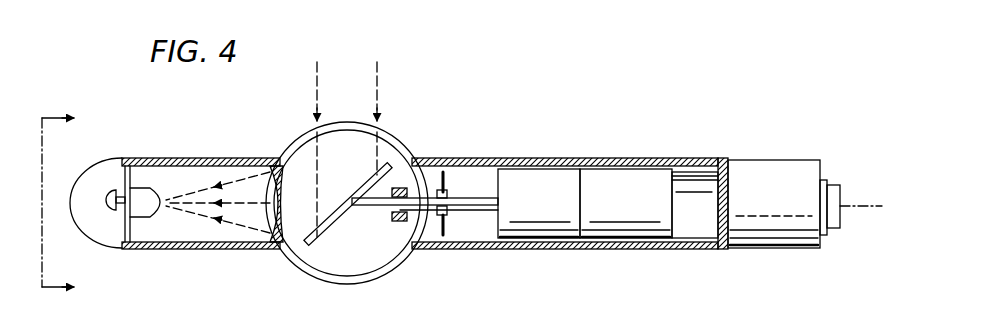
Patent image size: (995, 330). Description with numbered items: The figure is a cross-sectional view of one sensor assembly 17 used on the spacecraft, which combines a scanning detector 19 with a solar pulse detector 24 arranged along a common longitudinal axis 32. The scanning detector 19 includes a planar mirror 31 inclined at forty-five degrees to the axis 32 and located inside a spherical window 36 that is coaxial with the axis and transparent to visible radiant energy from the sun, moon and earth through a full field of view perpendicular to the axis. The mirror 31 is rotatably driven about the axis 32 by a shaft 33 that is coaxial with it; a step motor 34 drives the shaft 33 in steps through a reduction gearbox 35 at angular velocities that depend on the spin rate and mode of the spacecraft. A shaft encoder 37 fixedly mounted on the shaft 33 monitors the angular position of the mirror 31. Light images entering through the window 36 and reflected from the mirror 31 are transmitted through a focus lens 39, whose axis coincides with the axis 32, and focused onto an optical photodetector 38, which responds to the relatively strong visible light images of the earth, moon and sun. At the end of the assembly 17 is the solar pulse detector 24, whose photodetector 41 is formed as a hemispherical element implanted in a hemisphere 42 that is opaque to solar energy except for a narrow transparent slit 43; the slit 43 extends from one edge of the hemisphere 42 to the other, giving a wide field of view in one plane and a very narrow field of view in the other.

The sensor assembly 17 is at (618, 270).
The scanning detector 19 is at (400, 118).
The solar pulse detector 24 is at (60, 204).
The planar mirror 31 is at (352, 198).
The longitudinal axis 32 is at (862, 205).
The shaft 33 is at (472, 212).
The step motor 34 is at (634, 206).
The reduction gearbox 35 is at (550, 205).
The spherical window 36 is at (343, 121).
The shaft encoder 37 is at (446, 178).
The optical photodetector 38 is at (143, 206).
The focus lens 39 is at (272, 245).
The photodetector 41 is at (110, 212).
The hemisphere 42 is at (105, 160).
The transparent slit 43 is at (780, 205).